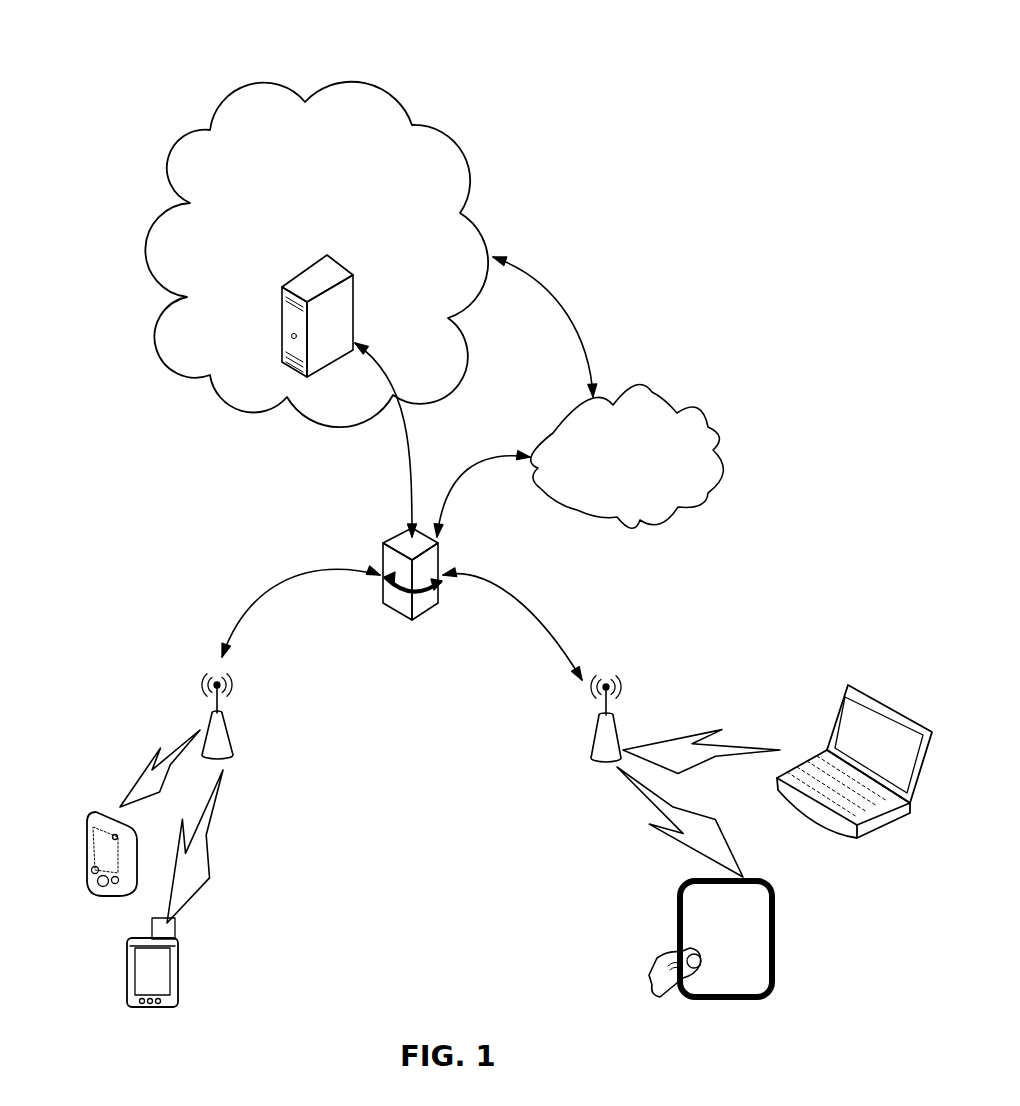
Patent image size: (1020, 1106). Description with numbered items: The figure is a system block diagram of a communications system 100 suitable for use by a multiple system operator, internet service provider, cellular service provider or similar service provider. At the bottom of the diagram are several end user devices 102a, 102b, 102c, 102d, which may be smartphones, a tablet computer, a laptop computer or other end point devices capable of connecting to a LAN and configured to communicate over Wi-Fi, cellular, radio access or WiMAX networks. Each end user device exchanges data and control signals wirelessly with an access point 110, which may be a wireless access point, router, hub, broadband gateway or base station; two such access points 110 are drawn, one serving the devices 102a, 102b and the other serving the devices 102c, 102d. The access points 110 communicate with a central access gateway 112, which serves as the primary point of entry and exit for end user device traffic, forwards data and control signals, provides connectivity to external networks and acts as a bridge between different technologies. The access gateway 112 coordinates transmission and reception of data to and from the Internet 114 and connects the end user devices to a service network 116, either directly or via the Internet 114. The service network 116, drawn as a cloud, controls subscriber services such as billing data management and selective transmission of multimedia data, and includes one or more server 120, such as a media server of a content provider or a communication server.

The communications system 100 is at (140, 101).
The service network 116 is at (450, 140).
The server 120 is at (353, 273).
The Internet 114 is at (682, 412).
The access gateway 112 is at (440, 558).
The access point 110 is at (228, 728).
The end user device 102a is at (98, 810).
The end user device 102b is at (178, 972).
The end user device 102c is at (778, 927).
The end user device 102d is at (828, 737).